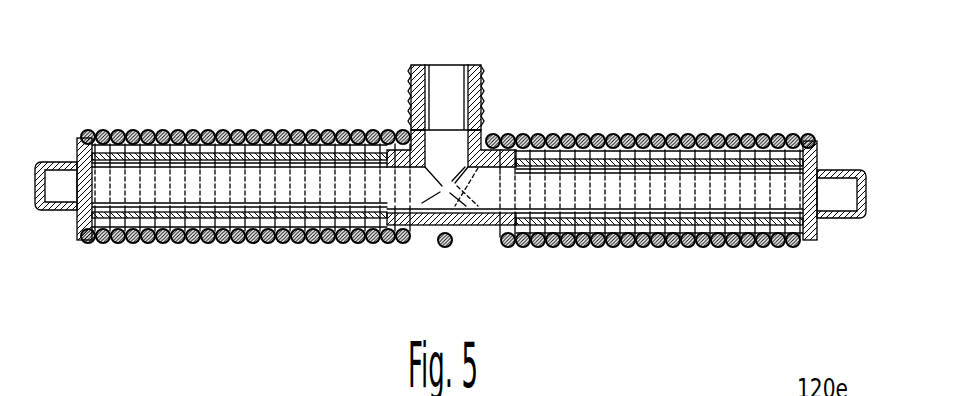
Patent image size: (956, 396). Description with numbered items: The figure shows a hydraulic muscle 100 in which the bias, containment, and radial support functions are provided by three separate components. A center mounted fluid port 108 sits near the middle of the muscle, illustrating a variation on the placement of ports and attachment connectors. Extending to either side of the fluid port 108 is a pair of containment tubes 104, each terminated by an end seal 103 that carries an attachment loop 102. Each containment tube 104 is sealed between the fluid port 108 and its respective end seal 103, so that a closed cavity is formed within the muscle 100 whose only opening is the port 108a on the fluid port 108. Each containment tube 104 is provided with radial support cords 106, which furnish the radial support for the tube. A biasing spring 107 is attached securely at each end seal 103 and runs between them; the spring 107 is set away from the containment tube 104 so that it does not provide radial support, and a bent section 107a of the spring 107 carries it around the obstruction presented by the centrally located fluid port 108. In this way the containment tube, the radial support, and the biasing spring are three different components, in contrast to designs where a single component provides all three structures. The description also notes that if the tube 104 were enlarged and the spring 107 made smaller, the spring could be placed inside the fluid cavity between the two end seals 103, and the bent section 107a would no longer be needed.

The hydraulic muscle 100 is at (568, 283).
The attachment loop 102 is at (50, 163).
The end seal 103 is at (77, 240).
The containment tube 104 is at (187, 205).
The radial support cords 106 is at (193, 238).
The biasing spring 107 is at (288, 134).
The bent section 107a is at (443, 247).
The fluid port 108 is at (482, 129).
The port 108a is at (450, 65).